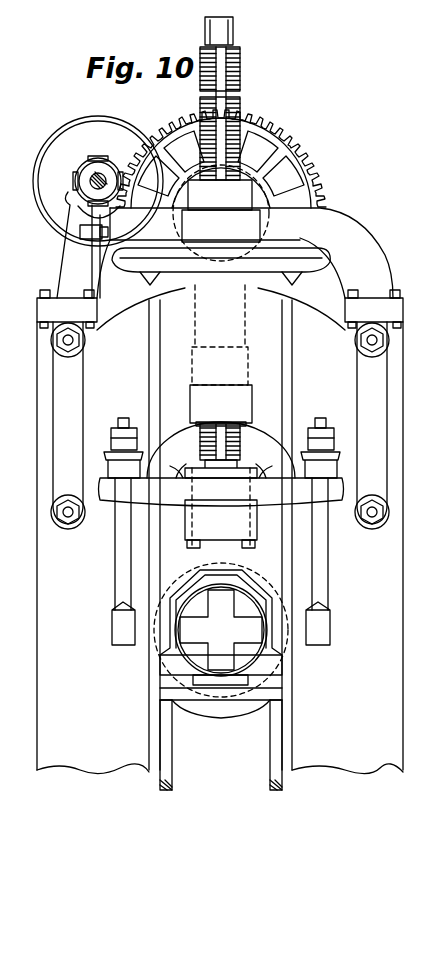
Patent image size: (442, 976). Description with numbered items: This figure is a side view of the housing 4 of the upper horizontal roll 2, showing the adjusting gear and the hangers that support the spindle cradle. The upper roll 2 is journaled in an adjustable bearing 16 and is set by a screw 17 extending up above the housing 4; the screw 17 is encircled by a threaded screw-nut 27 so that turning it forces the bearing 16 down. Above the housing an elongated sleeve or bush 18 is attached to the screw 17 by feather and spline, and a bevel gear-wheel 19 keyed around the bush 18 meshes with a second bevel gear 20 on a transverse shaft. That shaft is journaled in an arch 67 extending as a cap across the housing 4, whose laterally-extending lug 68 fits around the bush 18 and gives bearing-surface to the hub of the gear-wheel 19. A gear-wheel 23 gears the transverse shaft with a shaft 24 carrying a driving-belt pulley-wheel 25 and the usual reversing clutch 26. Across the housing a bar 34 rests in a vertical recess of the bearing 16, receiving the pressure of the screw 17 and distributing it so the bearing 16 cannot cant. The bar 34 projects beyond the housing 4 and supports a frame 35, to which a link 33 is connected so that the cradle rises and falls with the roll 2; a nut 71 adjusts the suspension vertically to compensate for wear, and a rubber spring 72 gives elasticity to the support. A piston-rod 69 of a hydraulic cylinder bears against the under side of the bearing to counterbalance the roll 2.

The horizontal roll 2 is at (221, 630).
The housing 4 is at (220, 531).
The adjustable bearing 16 is at (221, 634).
The screw 17 is at (241, 88).
The sleeve or bush 18 is at (220, 195).
The bevel gear-wheel 19 is at (132, 264).
The bevel gear 20 is at (187, 182).
The gear-wheel 23 is at (174, 120).
The shaft 24 is at (90, 175).
The driving-belt pulley-wheel 25 is at (46, 152).
The reversing clutch 26 is at (98, 176).
The screw-nut 27 is at (187, 440).
The link 33 is at (112, 585).
The bar 34 is at (221, 508).
The frame 35 is at (221, 464).
The arch 67 is at (245, 253).
The laterally-extending lug 68 is at (221, 226).
The piston-rod 69 is at (172, 740).
The nut 71 is at (112, 436).
The rubber spring 72 is at (108, 458).